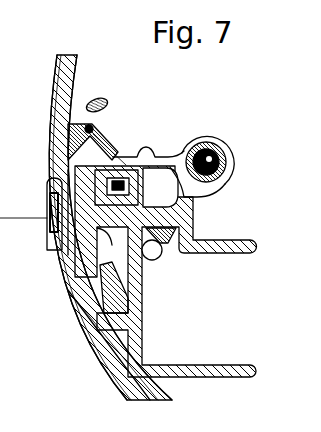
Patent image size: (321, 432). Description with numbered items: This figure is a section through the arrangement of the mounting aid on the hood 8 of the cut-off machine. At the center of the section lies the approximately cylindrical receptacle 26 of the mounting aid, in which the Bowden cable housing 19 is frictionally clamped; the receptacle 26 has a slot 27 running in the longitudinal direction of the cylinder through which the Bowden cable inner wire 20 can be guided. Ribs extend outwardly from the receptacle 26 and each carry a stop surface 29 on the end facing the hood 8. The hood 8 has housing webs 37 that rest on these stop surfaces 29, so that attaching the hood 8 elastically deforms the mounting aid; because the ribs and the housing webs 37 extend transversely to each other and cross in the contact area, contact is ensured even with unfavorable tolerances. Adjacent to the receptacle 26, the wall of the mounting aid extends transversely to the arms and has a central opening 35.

The hood 8 is at (115, 343).
The Bowden cable housing 19 is at (208, 160).
The Bowden cable inner wire 20 is at (204, 157).
The receptacle 26 is at (222, 143).
The slot 27 is at (223, 160).
The stop surface 29 is at (122, 160).
The central opening 35 is at (63, 253).
The housing web 37 is at (140, 165).